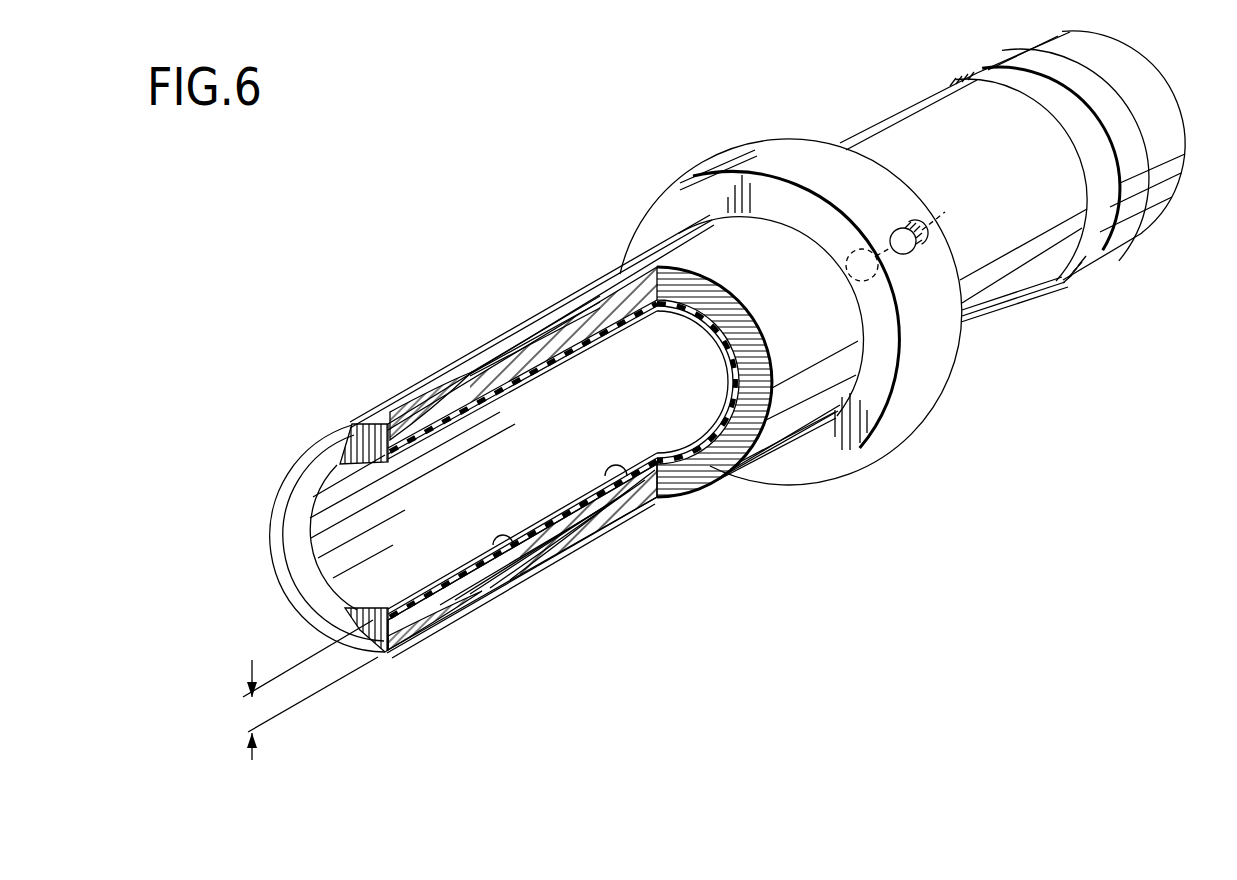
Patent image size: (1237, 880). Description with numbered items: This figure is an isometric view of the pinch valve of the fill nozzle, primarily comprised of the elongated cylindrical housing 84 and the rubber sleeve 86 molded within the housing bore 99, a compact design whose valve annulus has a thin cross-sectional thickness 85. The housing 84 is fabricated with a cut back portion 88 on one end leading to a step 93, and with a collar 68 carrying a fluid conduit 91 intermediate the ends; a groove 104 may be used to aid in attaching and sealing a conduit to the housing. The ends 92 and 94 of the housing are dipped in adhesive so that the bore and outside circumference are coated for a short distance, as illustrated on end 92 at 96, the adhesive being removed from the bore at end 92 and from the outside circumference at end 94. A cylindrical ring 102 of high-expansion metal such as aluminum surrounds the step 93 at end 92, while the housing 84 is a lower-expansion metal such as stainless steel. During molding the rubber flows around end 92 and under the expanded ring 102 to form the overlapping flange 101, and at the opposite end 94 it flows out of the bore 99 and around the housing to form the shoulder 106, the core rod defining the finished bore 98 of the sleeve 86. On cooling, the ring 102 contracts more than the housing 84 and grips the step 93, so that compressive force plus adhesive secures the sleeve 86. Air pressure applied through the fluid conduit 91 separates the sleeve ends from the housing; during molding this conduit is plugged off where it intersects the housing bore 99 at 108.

The collar 68 is at (636, 224).
The housing 84 is at (543, 307).
The cross-sectional thickness 85 is at (252, 713).
The sleeve 86 is at (590, 535).
The cut back portion 88 is at (430, 397).
The fluid conduit 91 is at (905, 222).
The end of the housing 92 is at (256, 504).
The step 93 is at (467, 373).
The end of the housing 94 is at (1182, 240).
The adhesive coating 96 is at (457, 613).
The finished bore of the sleeve 98 is at (660, 478).
The housing bore 99 is at (543, 560).
The overlapping flange 101 is at (413, 620).
The ring 102 is at (395, 393).
The groove 104 is at (1062, 290).
The shoulder 106 is at (1118, 65).
The intersection of fluid conduit with housing bore 108 is at (852, 250).